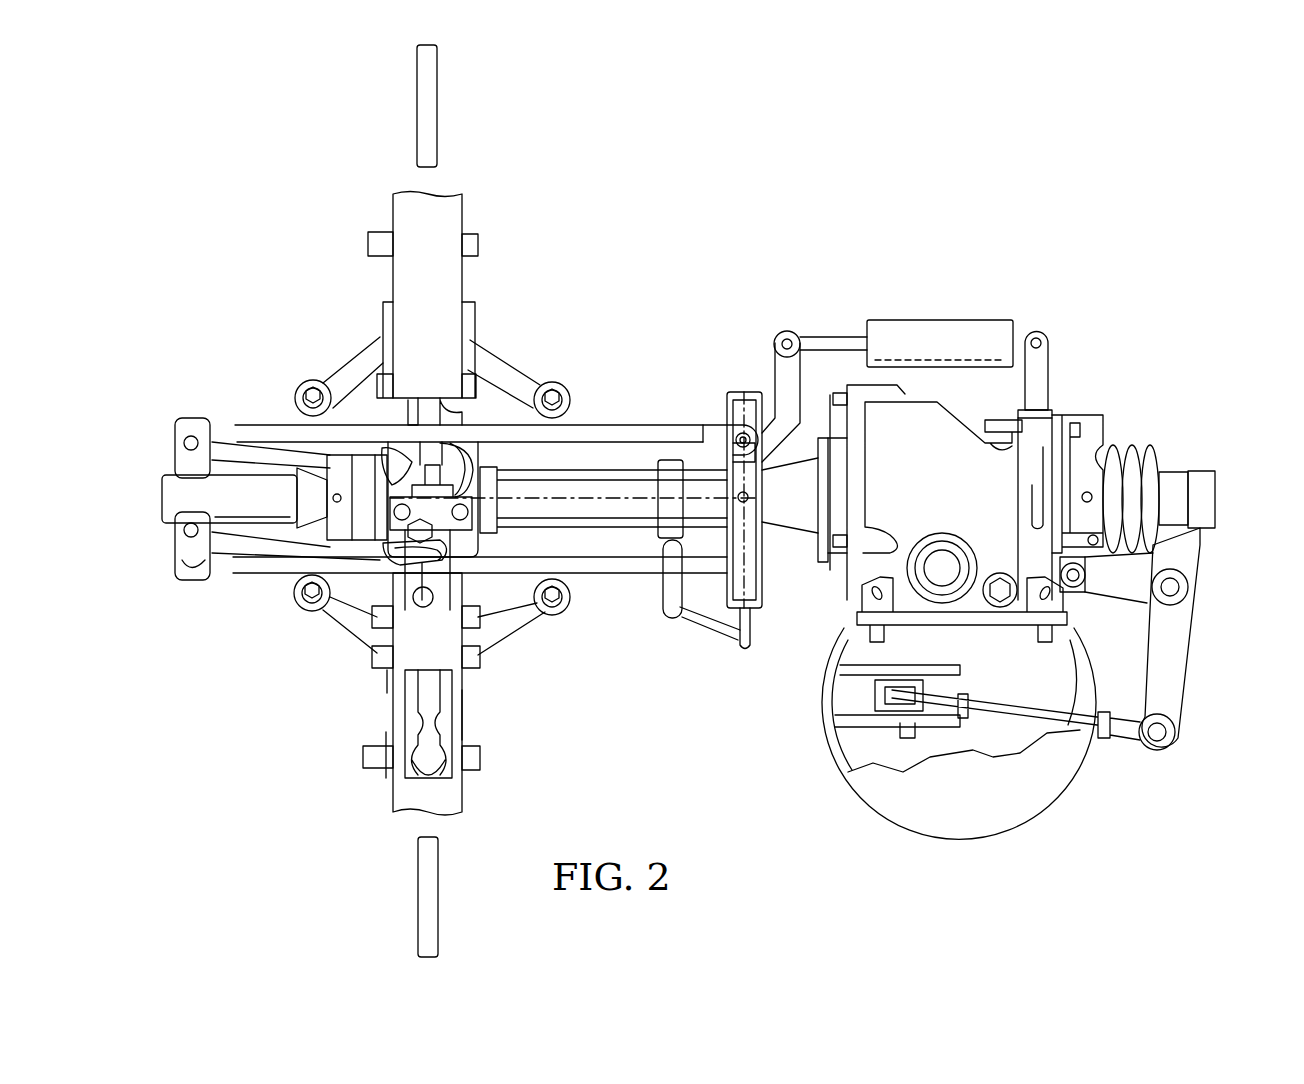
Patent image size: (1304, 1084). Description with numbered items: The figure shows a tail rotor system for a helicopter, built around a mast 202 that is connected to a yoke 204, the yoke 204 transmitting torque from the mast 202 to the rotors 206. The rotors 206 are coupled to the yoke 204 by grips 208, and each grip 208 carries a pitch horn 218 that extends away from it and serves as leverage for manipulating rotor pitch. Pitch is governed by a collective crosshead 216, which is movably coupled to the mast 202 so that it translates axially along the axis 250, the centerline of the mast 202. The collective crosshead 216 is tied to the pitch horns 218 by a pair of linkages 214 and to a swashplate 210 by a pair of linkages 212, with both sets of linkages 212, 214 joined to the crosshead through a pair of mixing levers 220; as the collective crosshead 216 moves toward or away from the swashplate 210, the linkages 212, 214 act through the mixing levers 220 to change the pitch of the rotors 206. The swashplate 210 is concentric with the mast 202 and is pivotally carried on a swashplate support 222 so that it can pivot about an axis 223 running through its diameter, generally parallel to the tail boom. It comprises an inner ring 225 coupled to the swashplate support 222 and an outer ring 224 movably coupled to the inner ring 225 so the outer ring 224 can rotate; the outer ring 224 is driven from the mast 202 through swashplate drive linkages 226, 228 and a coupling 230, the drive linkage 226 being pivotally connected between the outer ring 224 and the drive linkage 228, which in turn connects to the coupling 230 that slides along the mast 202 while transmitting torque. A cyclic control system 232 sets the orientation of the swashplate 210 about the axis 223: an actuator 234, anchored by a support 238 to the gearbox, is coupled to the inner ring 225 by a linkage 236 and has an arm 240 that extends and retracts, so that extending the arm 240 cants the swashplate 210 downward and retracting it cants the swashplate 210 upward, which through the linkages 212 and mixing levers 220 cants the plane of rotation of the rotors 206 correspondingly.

The mast 202 is at (605, 470).
The yoke 204 is at (322, 330).
The rotors 206 is at (417, 108).
The grips 208 is at (393, 212).
The swashplate 210 is at (715, 395).
The linkages 212 is at (280, 425).
The linkages 214 is at (250, 427).
The collective crosshead 216 is at (162, 498).
The pitch horns 218 is at (460, 575).
The mixing levers 220 is at (175, 450).
The swashplate support 222 is at (792, 532).
The axis 223 is at (748, 497).
The outer ring 224 is at (742, 392).
The inner ring 225 is at (752, 622).
The swashplate drive linkage 226 is at (700, 628).
The swashplate drive linkage 228 is at (662, 605).
The coupling 230 is at (668, 460).
The cyclic control system 232 is at (1004, 283).
The actuator 234 is at (938, 320).
The linkage 236 is at (775, 360).
The support 238 is at (1050, 375).
The arm 240 is at (833, 337).
The axis 250 is at (587, 503).